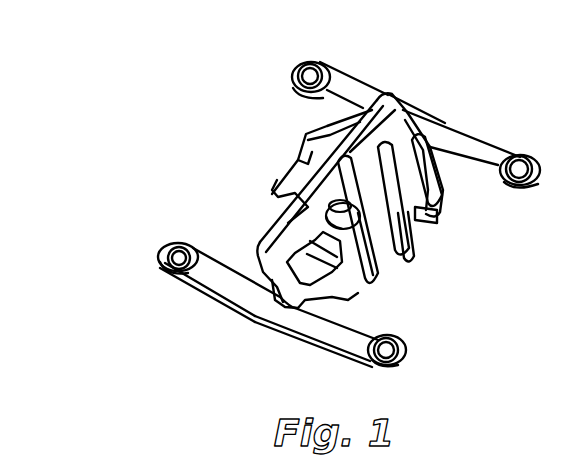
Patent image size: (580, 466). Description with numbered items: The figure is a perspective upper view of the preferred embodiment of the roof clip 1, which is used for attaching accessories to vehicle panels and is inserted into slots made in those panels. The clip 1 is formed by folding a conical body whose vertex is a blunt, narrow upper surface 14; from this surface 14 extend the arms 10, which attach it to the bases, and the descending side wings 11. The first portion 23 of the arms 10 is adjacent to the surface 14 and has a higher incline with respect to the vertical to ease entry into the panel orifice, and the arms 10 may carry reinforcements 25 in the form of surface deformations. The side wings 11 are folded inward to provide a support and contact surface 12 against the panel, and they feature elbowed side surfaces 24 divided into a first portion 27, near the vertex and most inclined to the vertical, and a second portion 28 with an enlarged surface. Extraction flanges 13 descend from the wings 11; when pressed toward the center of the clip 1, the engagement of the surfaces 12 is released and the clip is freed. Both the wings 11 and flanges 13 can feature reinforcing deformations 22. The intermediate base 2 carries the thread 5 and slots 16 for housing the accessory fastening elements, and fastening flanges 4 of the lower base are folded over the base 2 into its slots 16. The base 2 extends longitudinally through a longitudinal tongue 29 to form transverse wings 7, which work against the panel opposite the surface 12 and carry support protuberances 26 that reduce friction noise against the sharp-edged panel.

The clip 1 is at (301, 125).
The base 2 is at (300, 225).
The fastening flanges 4 is at (330, 240).
The thread 5 is at (313, 195).
The transverse wings 7 is at (250, 301).
The arms 10 is at (322, 160).
The side wings 11 is at (437, 131).
The contact surface 12 is at (446, 215).
The extraction flanges 13 is at (426, 241).
The upper surface 14 is at (376, 98).
The slots 16 is at (262, 245).
The reinforcing deformations 22 is at (426, 224).
The first portion 23 is at (405, 113).
The elbowed side surfaces 24 is at (414, 266).
The reinforcements 25 is at (386, 294).
The support protuberances 26 is at (181, 263).
The first portion 27 is at (468, 156).
The second portion 28 is at (440, 200).
The longitudinal tongue 29 is at (290, 306).